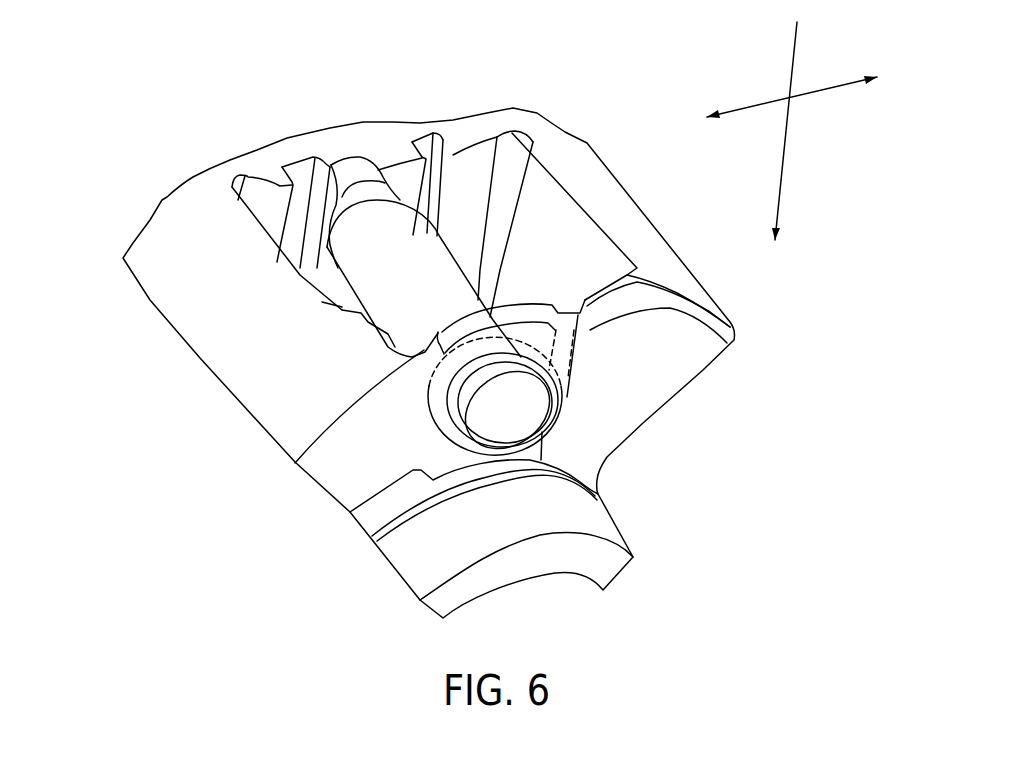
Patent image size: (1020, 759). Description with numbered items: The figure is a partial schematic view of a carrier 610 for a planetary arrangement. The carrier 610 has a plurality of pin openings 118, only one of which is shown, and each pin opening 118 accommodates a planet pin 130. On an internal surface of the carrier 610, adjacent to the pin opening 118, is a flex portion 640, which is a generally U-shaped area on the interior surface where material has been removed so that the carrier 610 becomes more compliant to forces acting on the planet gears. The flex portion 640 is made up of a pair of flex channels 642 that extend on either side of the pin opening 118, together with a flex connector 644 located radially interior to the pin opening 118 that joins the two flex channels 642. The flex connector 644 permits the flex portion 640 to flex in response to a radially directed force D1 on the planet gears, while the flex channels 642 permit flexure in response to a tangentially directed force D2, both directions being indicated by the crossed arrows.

The carrier 610 is at (207, 432).
The flex portion 640 is at (181, 167).
The flex channels 642 is at (441, 167).
The flex connector 644 is at (342, 307).
The planet pin 130 is at (410, 280).
The pin opening 118 is at (560, 393).
The radially directed force D1 is at (795, 67).
The tangentially directed force D2 is at (753, 107).